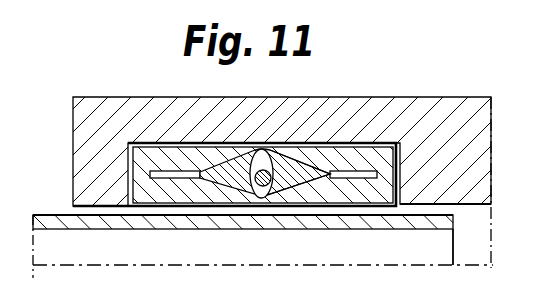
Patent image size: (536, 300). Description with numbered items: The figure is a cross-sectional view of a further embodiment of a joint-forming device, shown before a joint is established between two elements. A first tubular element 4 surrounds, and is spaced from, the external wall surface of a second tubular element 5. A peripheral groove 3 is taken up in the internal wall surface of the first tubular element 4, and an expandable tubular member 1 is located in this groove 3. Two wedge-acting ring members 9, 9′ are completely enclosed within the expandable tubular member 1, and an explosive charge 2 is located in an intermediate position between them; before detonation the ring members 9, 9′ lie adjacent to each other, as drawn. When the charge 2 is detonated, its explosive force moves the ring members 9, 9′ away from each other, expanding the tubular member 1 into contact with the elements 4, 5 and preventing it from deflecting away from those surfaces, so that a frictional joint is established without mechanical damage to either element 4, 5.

The expandable tubular member 1 is at (160, 197).
The explosive charge 2 is at (262, 199).
The peripheral groove 3 is at (145, 143).
The first tubular element 4 is at (286, 107).
The second tubular element 5 is at (53, 224).
The wedge-acting ring member 9 is at (217, 182).
The wedge-acting ring member 9′ is at (297, 185).